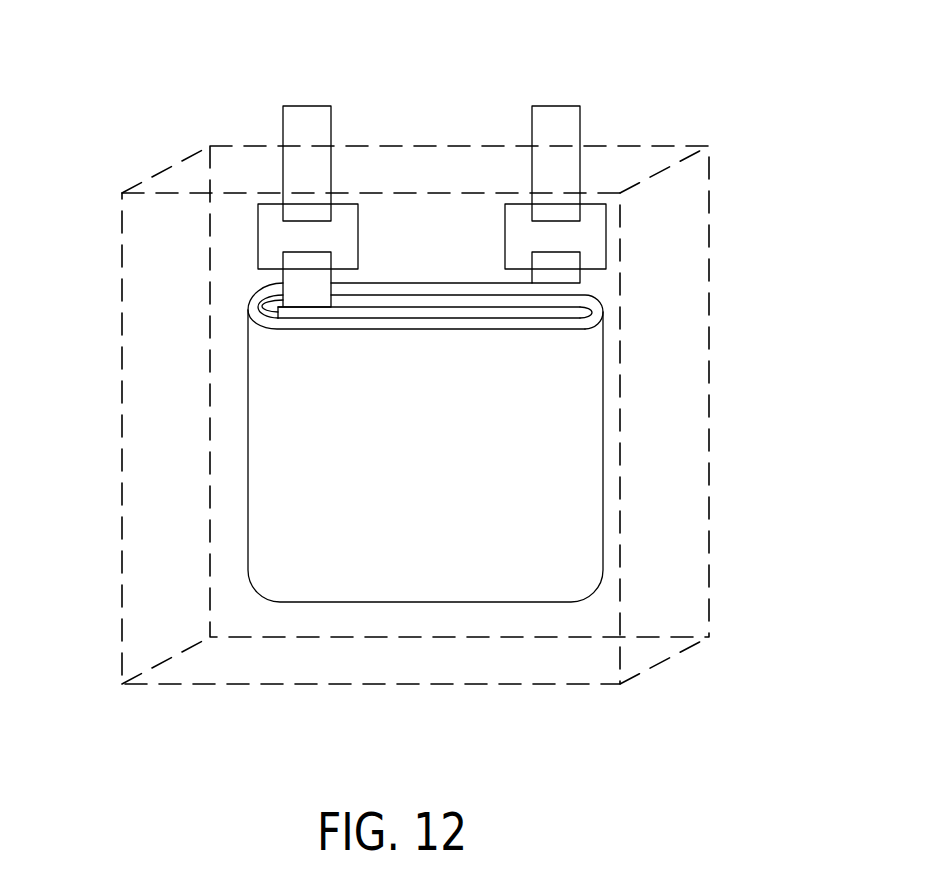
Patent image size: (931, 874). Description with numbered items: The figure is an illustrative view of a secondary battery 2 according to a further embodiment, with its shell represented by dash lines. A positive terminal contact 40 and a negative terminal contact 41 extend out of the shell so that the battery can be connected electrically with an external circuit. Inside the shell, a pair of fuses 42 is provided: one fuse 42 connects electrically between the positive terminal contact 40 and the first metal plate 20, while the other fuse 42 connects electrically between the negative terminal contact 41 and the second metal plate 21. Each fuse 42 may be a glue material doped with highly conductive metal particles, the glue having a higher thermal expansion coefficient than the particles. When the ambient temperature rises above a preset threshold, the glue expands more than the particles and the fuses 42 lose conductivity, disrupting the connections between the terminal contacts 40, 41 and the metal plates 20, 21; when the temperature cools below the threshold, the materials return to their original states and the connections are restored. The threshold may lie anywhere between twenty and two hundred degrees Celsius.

The secondary battery 2 is at (688, 103).
The first metal plate 20 is at (305, 279).
The second metal plate 21 is at (570, 283).
The positive terminal contact 40 is at (300, 117).
The negative terminal contact 41 is at (552, 115).
The fuse 42 is at (258, 204).